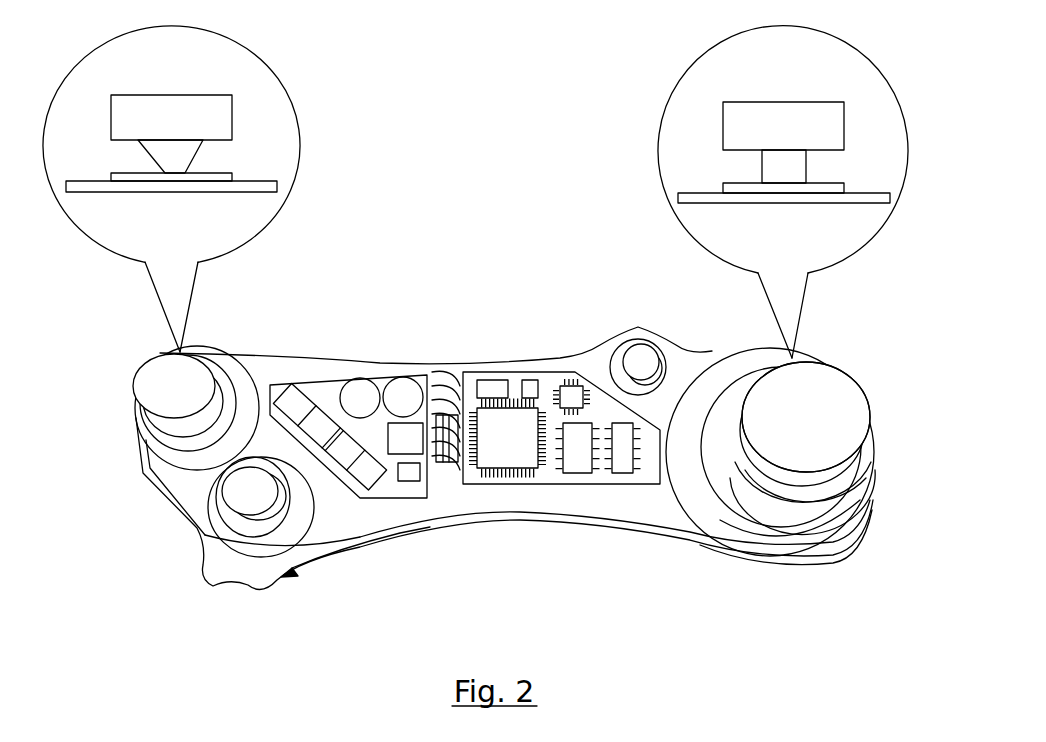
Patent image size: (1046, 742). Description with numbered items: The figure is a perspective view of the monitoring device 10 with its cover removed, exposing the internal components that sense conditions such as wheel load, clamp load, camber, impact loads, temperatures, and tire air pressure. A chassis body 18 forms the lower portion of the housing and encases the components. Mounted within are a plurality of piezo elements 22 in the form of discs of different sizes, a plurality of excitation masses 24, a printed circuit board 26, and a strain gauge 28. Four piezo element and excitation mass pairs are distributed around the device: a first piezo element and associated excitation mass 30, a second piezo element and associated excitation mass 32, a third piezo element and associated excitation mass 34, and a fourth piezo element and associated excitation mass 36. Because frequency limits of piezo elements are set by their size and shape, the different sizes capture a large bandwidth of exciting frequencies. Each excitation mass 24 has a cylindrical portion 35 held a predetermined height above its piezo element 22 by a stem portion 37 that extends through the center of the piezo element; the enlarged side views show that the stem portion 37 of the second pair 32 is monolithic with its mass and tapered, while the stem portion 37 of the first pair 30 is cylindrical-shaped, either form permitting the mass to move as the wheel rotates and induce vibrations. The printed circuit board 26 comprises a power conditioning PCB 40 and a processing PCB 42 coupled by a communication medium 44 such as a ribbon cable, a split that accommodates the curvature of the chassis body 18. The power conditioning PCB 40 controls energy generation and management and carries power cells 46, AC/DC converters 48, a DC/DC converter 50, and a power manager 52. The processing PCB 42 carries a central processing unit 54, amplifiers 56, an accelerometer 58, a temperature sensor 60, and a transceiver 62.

The monitoring device 10 is at (145, 528).
The chassis body 18 is at (193, 492).
The piezo elements 22 is at (783, 527).
The excitation masses 24 is at (835, 407).
The printed circuit board 26 is at (347, 367).
The strain gauge 28 is at (443, 380).
The first piezo element and associated excitation mass 30 is at (872, 360).
The second piezo element and associated excitation mass 32 is at (160, 352).
The third piezo element and associated excitation mass 34 is at (202, 582).
The cylindrical portion 35 is at (826, 492).
The fourth piezo element and associated excitation mass 36 is at (638, 325).
The stem portion 37 is at (787, 478).
The power conditioning PCB 40 is at (397, 443).
The processing PCB 42 is at (567, 486).
The communication medium 44 is at (440, 465).
The power cells 46 is at (343, 383).
The AC/DC converters 48 is at (333, 457).
The DC/DC converter 50 is at (410, 473).
The power manager 52 is at (385, 555).
The central processing unit 54 is at (518, 452).
The amplifiers 56 is at (625, 463).
The accelerometer 58 is at (498, 383).
The temperature sensor 60 is at (528, 383).
The transceiver 62 is at (573, 383).